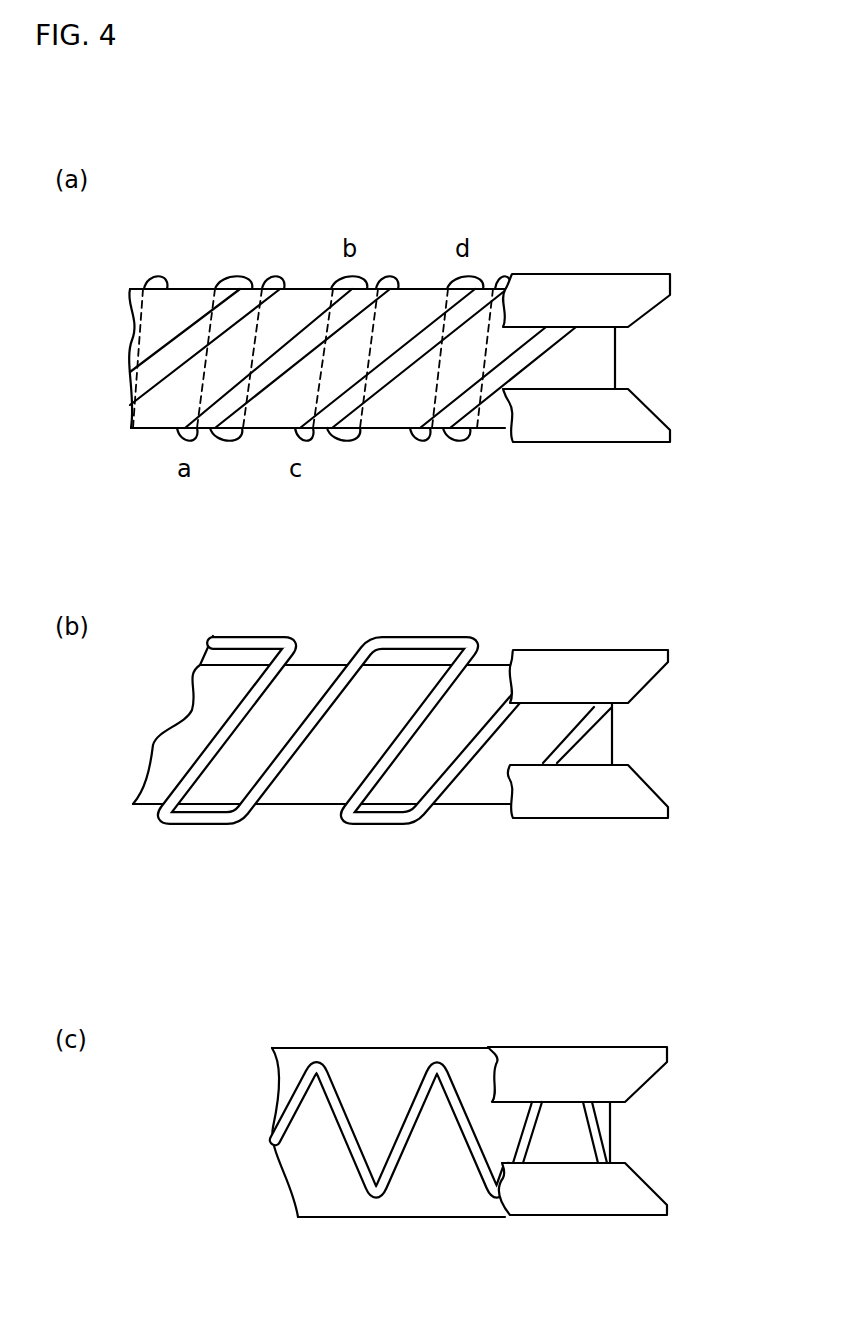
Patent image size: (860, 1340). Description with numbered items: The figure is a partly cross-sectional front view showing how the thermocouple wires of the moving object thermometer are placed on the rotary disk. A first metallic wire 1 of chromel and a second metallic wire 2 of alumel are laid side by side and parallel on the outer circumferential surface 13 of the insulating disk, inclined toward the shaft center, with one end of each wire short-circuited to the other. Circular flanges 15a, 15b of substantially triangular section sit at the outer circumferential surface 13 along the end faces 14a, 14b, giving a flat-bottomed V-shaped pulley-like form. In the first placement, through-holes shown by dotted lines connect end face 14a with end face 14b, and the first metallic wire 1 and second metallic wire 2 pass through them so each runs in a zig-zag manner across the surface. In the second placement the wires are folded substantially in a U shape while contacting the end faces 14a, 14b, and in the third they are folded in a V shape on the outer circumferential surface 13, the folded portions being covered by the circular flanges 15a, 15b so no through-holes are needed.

The first metallic wire 1 is at (300, 323).
The second metallic wire 2 is at (270, 397).
The outer circumferential surface 13 is at (593, 363).
The end face 14a is at (385, 428).
The end face 14b is at (420, 289).
The circular flange 15a is at (628, 413).
The circular flange 15b is at (632, 298).